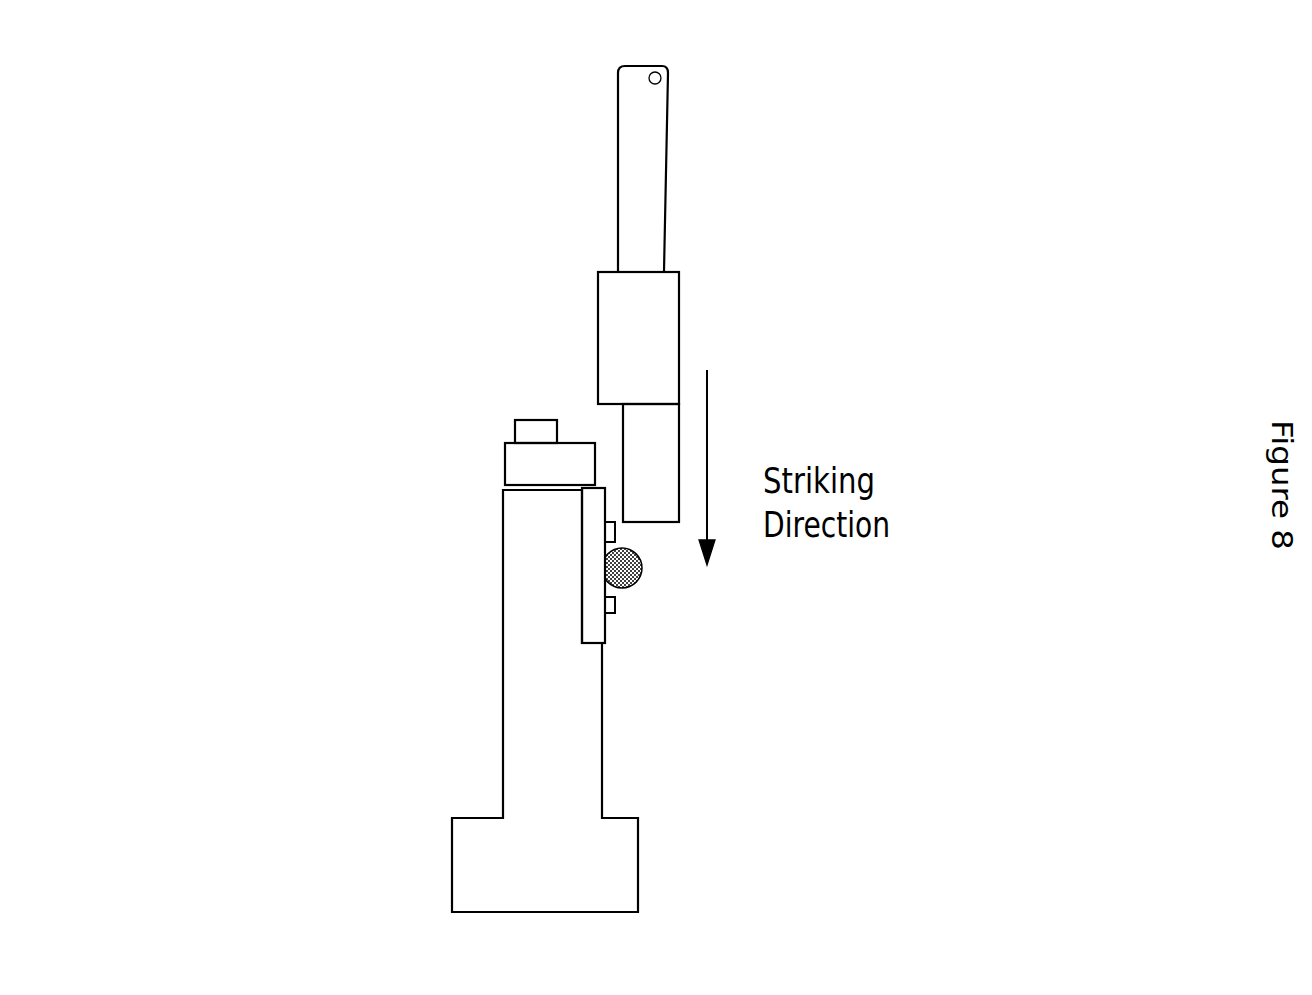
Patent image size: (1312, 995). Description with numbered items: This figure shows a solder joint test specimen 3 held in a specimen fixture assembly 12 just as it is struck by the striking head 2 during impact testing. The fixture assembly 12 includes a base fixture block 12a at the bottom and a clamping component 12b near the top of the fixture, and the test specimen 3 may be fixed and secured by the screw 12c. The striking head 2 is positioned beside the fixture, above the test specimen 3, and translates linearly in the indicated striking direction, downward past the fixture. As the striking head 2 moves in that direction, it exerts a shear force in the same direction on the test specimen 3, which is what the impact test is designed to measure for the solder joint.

The striking head 2 is at (655, 333).
The test specimen 3 is at (606, 627).
The specimen fixture assembly 12 is at (408, 598).
The base fixture block 12a is at (480, 873).
The clamping component 12b is at (518, 460).
The screw 12c is at (522, 414).